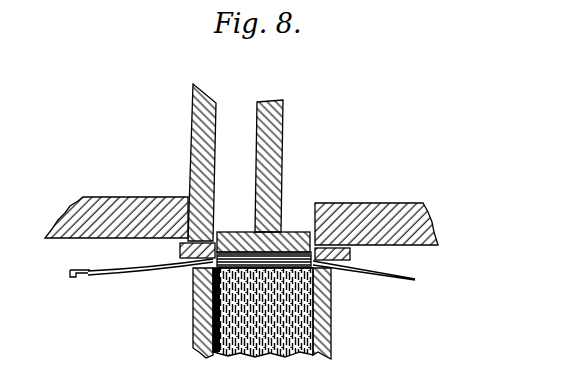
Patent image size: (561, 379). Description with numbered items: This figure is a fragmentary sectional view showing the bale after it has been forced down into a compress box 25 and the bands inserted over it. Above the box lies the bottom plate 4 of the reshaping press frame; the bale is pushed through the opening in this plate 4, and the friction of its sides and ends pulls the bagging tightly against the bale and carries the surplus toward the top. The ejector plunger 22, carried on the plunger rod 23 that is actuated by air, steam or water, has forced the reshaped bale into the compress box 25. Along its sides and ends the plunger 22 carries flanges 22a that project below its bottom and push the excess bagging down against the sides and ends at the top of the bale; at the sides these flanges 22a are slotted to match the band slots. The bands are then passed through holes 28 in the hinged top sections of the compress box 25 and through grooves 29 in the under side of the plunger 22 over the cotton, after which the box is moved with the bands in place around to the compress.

The bottom plate 4 is at (133, 212).
The plunger 22 is at (294, 234).
The flanges 22a is at (193, 300).
The plunger rod 23 is at (278, 160).
The compress box 25 is at (210, 333).
The holes 28 is at (180, 256).
The grooves 29 is at (288, 272).